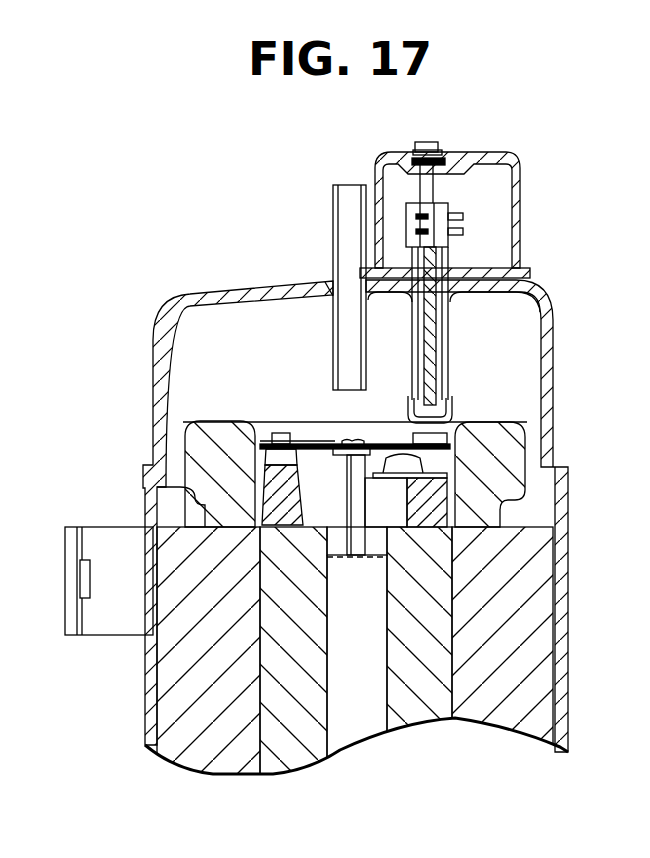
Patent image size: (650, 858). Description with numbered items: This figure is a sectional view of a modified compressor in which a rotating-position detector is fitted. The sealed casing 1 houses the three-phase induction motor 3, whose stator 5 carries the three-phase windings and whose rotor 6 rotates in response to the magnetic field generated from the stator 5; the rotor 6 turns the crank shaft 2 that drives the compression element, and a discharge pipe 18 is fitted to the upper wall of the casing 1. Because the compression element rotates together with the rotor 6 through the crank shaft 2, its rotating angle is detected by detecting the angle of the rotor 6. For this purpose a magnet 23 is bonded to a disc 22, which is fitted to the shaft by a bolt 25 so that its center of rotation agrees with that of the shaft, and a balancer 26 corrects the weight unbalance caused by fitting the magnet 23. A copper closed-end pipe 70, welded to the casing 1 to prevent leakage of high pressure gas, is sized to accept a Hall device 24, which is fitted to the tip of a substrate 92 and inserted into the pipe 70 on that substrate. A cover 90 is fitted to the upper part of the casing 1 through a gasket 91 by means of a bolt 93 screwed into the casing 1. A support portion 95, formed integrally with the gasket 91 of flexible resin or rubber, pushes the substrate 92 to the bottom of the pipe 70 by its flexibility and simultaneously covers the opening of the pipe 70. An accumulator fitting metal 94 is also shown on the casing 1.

The sealed casing 1 is at (553, 312).
The crank shaft 2 is at (357, 723).
The three-phase induction motor 3 is at (377, 670).
The stator 5 is at (545, 628).
The rotor 6 is at (296, 733).
The discharge pipe 18 is at (333, 220).
The disc 22 is at (305, 443).
The magnet 23 is at (545, 437).
The Hall device 24 is at (452, 408).
The bolt 25 is at (365, 503).
The balancer 26 is at (275, 433).
The pipe 70 is at (450, 348).
The cover 90 is at (519, 156).
The gasket 91 is at (477, 266).
The substrate 92 is at (420, 342).
The bolt 93 is at (428, 141).
The accumulator fitting metal 94 is at (75, 569).
The support portion 95 is at (405, 202).